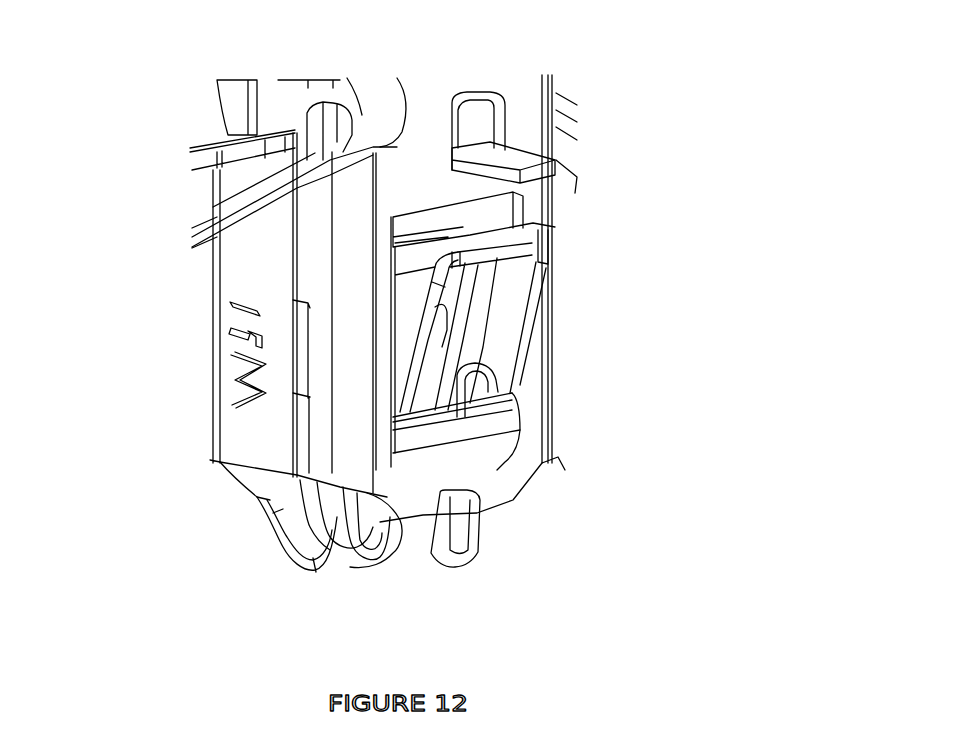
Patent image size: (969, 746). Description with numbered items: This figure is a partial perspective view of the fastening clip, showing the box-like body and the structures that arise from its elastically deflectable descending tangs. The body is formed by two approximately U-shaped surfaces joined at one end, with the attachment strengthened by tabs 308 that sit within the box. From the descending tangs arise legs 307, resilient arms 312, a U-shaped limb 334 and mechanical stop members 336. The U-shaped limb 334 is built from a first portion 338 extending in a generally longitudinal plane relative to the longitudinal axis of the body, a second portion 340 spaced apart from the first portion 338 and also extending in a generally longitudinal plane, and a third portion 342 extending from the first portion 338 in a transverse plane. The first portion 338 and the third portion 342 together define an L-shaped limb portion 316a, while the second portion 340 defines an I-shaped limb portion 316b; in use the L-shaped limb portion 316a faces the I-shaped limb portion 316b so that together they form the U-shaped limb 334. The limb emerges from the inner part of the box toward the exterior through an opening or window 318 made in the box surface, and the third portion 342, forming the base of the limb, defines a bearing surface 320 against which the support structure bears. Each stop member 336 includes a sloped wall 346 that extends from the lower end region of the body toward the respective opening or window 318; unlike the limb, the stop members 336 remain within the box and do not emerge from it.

The legs 307 is at (483, 533).
The tabs 308 is at (250, 445).
The resilient arms 312 is at (530, 158).
The L-shaped limb portion 316a is at (405, 315).
The I-shaped limb portion 316b is at (548, 317).
The opening or window 318 is at (390, 250).
The bearing surface 320 is at (490, 237).
The U-shaped limb 334 is at (540, 347).
The stop members 336 is at (423, 448).
The first portion 338 is at (405, 370).
The second portion 340 is at (518, 368).
The third portion 342 is at (463, 232).
The sloped wall 346 is at (500, 435).